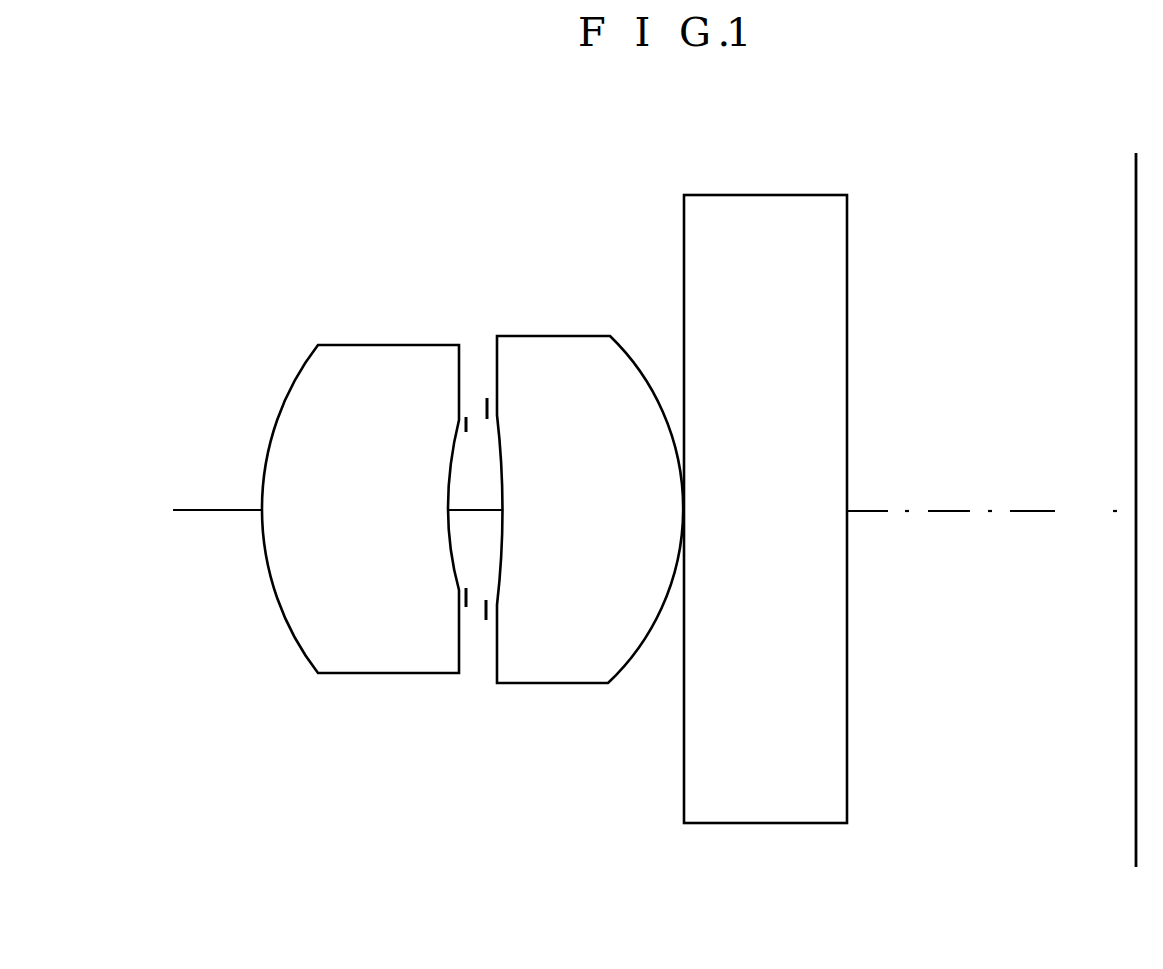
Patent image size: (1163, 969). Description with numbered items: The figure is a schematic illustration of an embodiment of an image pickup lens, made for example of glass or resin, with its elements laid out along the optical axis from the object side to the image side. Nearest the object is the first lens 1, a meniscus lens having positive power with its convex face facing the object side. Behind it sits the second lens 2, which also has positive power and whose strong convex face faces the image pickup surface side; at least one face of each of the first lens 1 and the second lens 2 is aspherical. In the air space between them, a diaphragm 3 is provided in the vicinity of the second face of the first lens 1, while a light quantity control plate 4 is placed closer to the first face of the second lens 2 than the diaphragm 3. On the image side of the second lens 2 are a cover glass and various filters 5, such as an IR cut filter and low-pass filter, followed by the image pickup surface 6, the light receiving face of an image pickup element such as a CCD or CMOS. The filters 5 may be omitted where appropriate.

The first lens 1 is at (372, 351).
The second lens 2 is at (561, 350).
The diaphragm 3 is at (467, 600).
The light quantity control plate 4 is at (486, 402).
The filters 5 is at (777, 818).
The image pickup surface 6 is at (1132, 822).